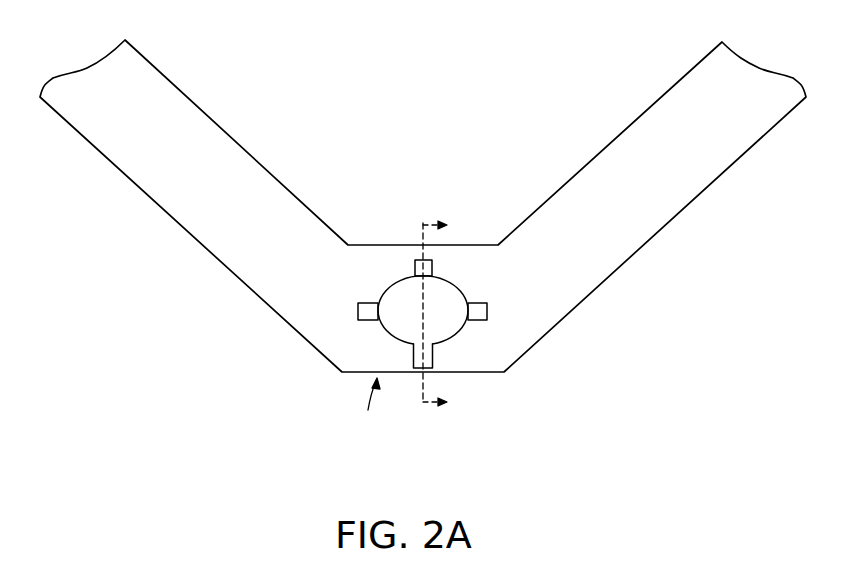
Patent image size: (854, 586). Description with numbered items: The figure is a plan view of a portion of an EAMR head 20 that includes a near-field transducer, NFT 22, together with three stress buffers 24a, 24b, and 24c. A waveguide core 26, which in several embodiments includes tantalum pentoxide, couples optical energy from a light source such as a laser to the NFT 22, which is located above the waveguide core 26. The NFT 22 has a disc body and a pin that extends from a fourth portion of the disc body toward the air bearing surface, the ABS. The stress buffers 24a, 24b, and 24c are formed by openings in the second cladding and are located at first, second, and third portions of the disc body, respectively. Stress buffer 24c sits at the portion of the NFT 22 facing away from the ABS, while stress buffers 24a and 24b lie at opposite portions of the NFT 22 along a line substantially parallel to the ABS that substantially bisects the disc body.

The EAMR head 20 is at (261, 99).
The NFT 22 is at (453, 339).
The stress buffer 24a is at (358, 308).
The stress buffer 24b is at (517, 301).
The stress buffer 24c is at (418, 260).
The waveguide core 26 is at (723, 175).